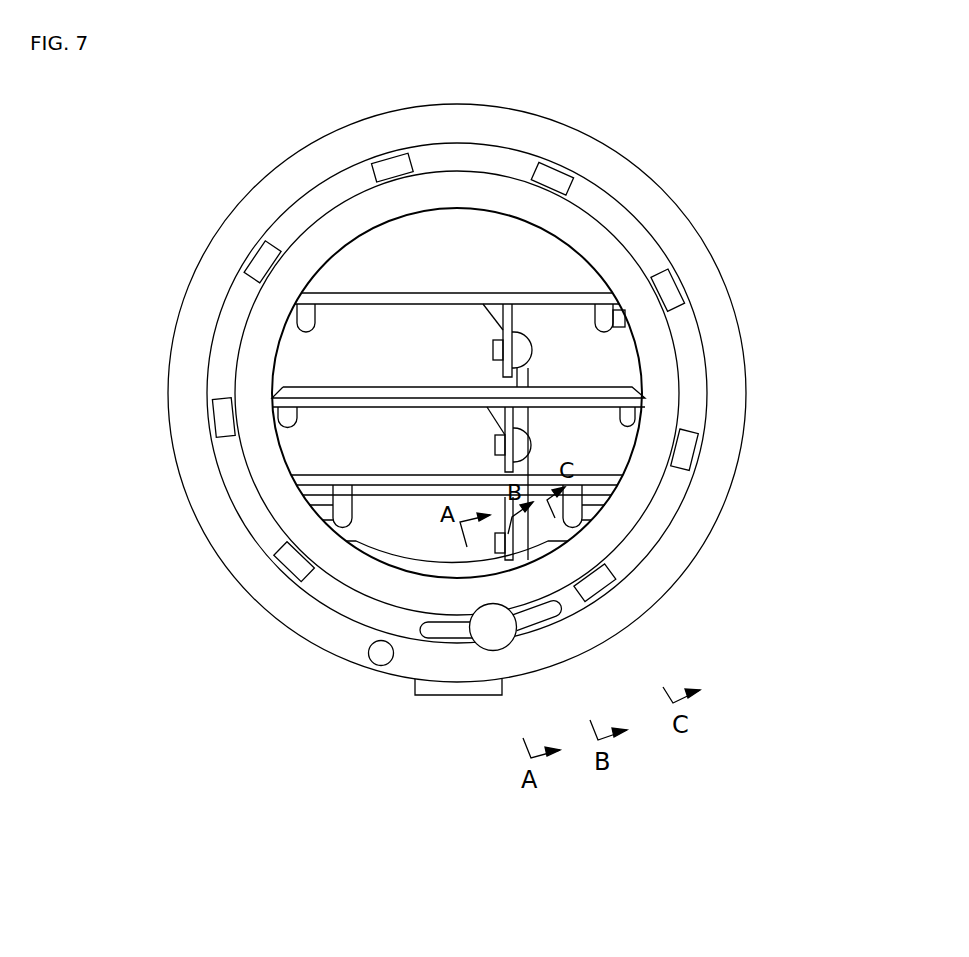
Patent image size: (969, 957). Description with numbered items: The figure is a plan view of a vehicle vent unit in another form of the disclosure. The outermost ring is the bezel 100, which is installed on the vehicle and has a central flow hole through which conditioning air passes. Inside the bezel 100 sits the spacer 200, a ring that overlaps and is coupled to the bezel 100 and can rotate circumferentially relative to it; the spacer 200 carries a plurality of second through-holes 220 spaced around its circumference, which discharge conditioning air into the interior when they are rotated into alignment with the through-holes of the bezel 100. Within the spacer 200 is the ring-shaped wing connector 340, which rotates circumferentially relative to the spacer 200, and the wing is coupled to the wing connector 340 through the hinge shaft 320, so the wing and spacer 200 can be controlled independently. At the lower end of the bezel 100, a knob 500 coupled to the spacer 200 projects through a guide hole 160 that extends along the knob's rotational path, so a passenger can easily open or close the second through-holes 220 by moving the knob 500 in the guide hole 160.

The bezel 100 is at (697, 253).
The spacer 200 is at (628, 225).
The second through-holes 220 is at (673, 292).
The wing connector 340 is at (667, 367).
The hinge shaft 320 is at (628, 413).
The guide hole 160 is at (433, 632).
The knob 500 is at (488, 637).